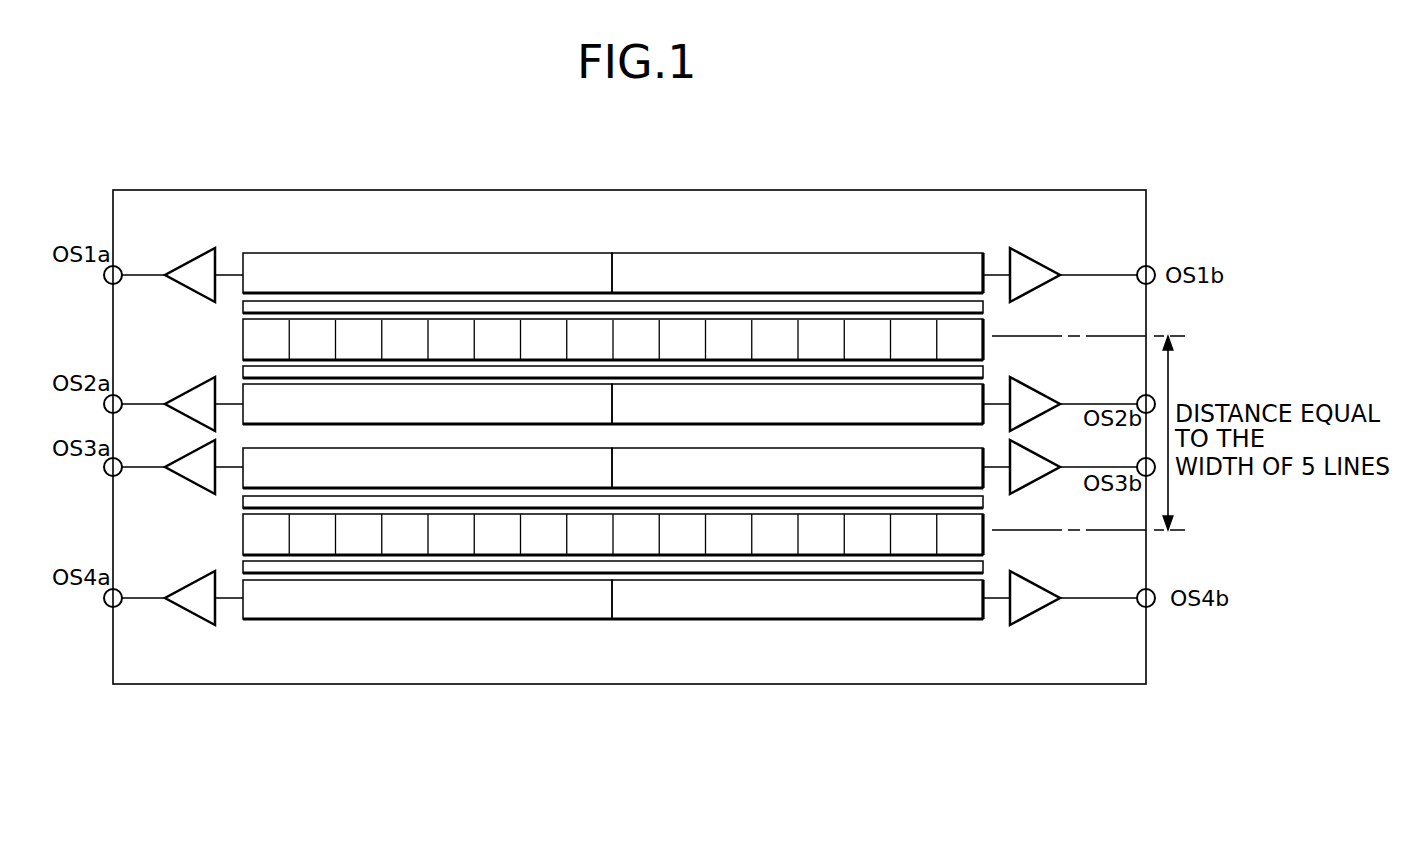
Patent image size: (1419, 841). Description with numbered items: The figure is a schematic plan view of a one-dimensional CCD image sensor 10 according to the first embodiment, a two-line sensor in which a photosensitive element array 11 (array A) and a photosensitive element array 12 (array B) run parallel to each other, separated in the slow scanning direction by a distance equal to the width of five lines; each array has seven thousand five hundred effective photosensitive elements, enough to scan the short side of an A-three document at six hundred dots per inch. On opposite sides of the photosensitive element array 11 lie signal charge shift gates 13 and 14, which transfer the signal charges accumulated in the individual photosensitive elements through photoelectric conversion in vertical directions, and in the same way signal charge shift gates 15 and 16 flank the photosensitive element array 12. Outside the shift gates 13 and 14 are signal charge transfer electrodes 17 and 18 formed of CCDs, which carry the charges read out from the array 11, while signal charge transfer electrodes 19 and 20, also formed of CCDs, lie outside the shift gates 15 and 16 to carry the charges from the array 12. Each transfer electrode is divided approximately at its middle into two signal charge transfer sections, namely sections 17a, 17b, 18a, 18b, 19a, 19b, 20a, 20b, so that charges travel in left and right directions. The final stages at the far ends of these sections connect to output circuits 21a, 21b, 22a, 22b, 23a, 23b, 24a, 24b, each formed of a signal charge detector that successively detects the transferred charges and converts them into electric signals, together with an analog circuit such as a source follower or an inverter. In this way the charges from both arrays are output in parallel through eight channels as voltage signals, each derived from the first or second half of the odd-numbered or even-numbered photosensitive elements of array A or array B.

The one-dimensional CCD image sensor 10 is at (746, 182).
The photosensitive element array (array A) 11 is at (243, 332).
The photosensitive element array (array B) 12 is at (243, 527).
The signal charge shift gate 13 is at (243, 306).
The signal charge shift gate 14 is at (243, 374).
The signal charge shift gate 15 is at (243, 501).
The signal charge shift gate 16 is at (243, 566).
The signal charge transfer electrode 17 is at (643, 243).
The signal charge transfer section 17a is at (436, 268).
The signal charge transfer section 17b is at (804, 268).
The signal charge transfer electrode 18 is at (642, 381).
The signal charge transfer section 18a is at (427, 404).
The signal charge transfer section 18b is at (797, 404).
The signal charge transfer electrode 19 is at (642, 485).
The signal charge transfer section 19a is at (427, 468).
The signal charge transfer section 19b is at (797, 468).
The signal charge transfer electrode 20 is at (642, 602).
The signal charge transfer section 20a is at (437, 607).
The signal charge transfer section 20b is at (805, 607).
The output circuit 21a is at (188, 262).
The output circuit 21b is at (1036, 260).
The output circuit 22a is at (185, 392).
The output circuit 22b is at (1036, 388).
The output circuit 23a is at (185, 456).
The output circuit 23b is at (1036, 480).
The output circuit 24a is at (185, 586).
The output circuit 24b is at (1036, 580).